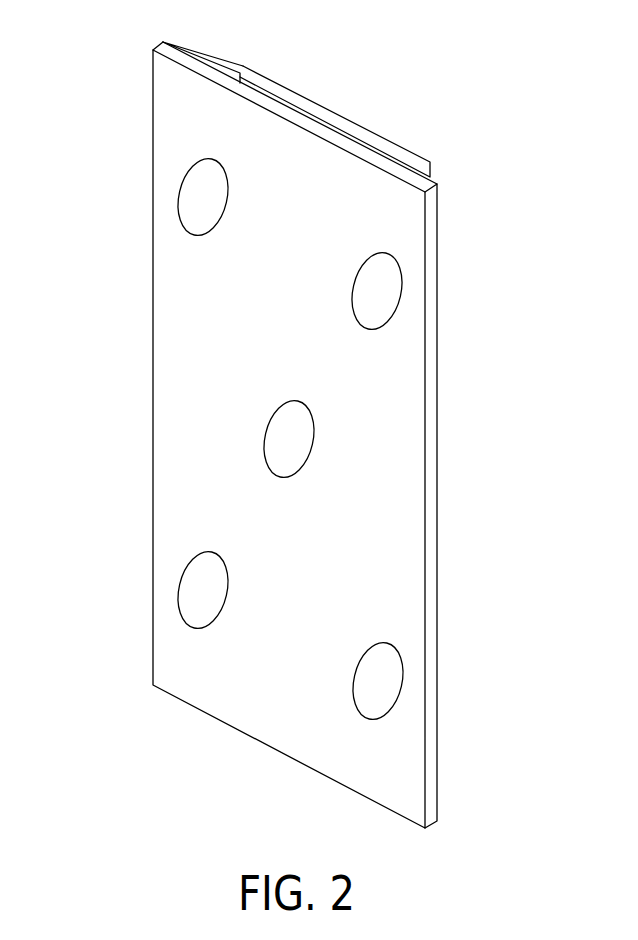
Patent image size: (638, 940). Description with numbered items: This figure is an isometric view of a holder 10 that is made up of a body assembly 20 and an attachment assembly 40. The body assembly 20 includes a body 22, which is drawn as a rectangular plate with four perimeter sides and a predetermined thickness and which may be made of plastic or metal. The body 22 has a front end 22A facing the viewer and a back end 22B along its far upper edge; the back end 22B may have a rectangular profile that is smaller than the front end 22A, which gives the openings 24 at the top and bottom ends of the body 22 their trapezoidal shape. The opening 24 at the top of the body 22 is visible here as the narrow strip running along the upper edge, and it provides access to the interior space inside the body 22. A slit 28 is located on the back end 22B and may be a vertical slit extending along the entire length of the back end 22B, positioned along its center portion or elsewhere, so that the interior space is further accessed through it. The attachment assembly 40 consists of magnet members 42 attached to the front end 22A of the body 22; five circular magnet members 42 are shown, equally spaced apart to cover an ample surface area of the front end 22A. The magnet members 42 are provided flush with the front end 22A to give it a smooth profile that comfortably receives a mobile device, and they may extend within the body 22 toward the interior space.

The holder 10 is at (297, 419).
The body assembly 20 is at (293, 419).
The body 22 is at (303, 435).
The front end 22A is at (178, 383).
The back end 22B is at (433, 180).
The openings 24 is at (296, 93).
The slit 28 is at (283, 88).
The attachment assembly 40 is at (405, 302).
The magnet members 42 is at (313, 435).